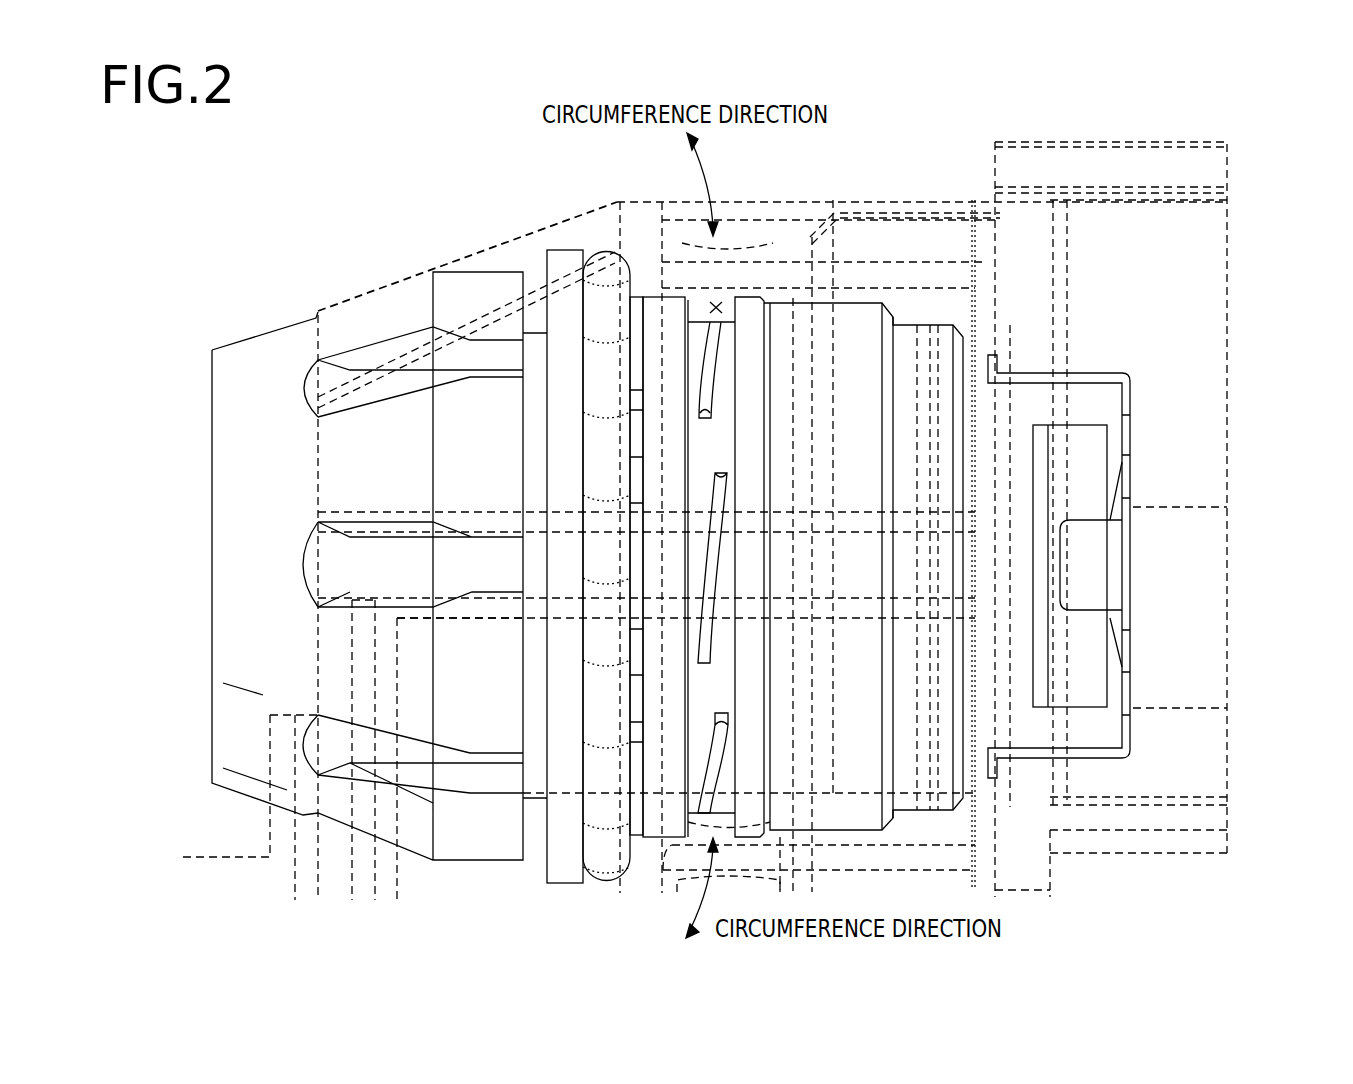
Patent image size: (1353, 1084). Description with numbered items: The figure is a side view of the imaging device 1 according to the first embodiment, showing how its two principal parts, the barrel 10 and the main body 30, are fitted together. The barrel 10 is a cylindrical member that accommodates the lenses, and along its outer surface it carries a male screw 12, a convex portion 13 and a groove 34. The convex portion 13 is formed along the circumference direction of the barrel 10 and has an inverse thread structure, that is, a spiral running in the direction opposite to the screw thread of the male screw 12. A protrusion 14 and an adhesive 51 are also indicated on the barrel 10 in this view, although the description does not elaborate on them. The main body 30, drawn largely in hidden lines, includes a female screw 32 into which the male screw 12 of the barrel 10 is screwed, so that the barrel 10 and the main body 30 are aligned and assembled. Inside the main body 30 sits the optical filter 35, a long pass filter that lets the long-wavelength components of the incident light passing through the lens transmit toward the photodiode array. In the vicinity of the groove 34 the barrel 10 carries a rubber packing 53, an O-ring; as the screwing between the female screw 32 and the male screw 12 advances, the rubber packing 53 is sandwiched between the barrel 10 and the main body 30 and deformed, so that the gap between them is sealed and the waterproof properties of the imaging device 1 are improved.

The imaging device 1 is at (1187, 129).
The barrel 10 is at (257, 336).
The male screw 12 is at (855, 303).
The female screw 32 is at (863, 546).
The convex portion 13 is at (709, 387).
The protrusion 14 is at (652, 297).
The main body 30 is at (1050, 140).
The groove 34 is at (637, 297).
The optical filter 35 is at (1102, 427).
The adhesive 51 is at (715, 300).
The rubber packing 53 is at (605, 252).